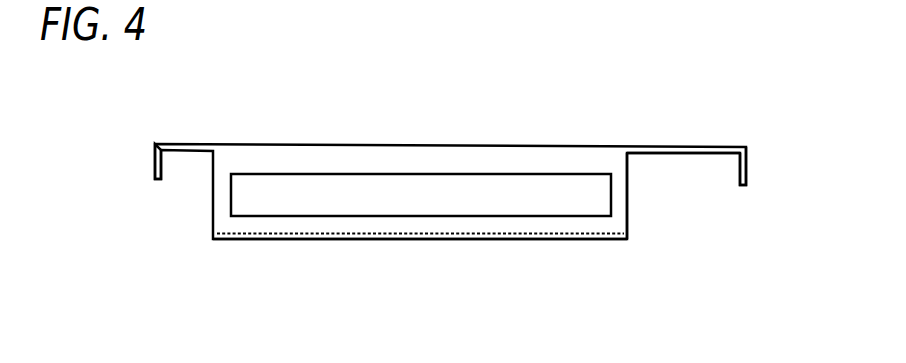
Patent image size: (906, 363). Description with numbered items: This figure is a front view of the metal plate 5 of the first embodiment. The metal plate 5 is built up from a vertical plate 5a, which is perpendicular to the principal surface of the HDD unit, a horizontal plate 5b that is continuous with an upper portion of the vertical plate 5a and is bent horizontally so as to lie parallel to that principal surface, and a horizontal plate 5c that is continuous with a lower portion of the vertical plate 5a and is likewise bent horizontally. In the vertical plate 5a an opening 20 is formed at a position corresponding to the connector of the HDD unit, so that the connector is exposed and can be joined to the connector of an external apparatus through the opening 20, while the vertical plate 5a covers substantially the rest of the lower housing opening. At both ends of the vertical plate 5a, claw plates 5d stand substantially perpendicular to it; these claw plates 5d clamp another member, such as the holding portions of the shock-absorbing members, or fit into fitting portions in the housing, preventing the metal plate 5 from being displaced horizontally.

The metal plate 5 is at (472, 123).
The vertical plate 5a is at (627, 218).
The horizontal plate 5b is at (658, 147).
The horizontal plate 5c is at (510, 242).
The claw plate 5d is at (155, 157).
The opening 20 is at (400, 195).